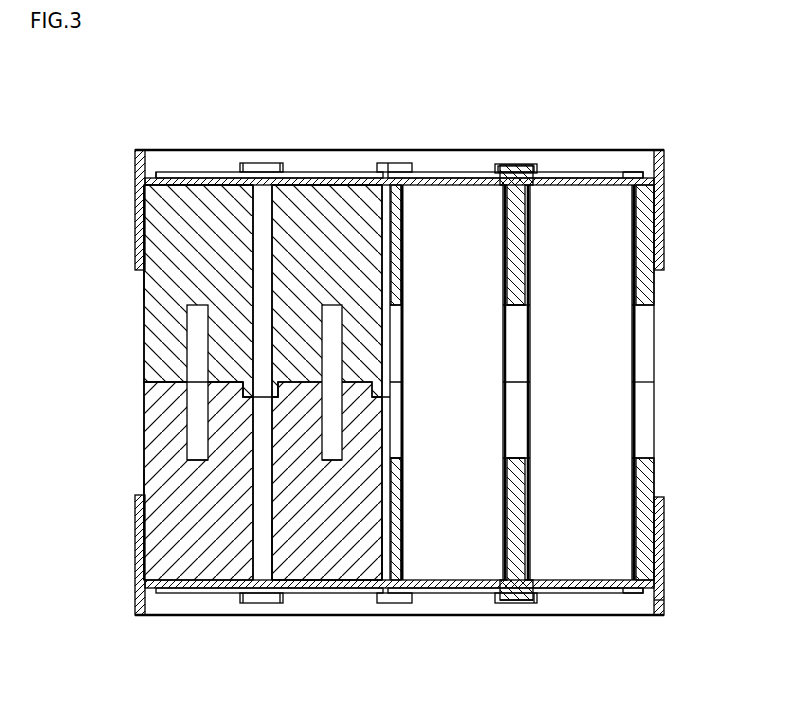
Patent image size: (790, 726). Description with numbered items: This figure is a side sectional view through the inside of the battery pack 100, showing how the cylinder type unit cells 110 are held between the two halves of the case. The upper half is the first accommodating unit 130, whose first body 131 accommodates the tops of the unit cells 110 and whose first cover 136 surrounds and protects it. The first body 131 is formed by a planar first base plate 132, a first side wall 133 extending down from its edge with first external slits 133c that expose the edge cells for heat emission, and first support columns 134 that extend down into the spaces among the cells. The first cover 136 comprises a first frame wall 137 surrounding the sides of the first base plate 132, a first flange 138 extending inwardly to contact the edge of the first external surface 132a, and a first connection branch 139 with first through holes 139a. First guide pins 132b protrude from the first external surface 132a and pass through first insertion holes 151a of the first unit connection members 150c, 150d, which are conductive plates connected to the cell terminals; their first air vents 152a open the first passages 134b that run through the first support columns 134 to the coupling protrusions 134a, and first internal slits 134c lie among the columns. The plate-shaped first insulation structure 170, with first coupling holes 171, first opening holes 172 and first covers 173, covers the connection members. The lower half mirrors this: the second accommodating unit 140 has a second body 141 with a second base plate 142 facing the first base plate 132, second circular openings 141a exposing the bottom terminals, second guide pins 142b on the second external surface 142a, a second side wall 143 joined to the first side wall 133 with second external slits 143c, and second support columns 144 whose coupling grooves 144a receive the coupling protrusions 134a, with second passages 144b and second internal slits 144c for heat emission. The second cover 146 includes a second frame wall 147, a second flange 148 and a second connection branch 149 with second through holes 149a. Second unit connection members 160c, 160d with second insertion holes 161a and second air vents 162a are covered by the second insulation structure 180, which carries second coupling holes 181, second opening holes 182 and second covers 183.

The battery pack 100 is at (135, 131).
The unit cells 110 is at (198, 440).
The first accommodating unit 130 is at (130, 240).
The first body 131 is at (140, 285).
The first base plate 132 is at (145, 192).
The first external surface 132a is at (333, 290).
The first guide pins 132b is at (524, 166).
The first side wall 133 is at (188, 328).
The first external slits 133c is at (398, 300).
The first support columns 134 is at (300, 330).
The coupling protrusions 134a is at (192, 383).
The first passages 134b is at (148, 222).
The first internal slits 134c is at (518, 345).
The first cover 136 is at (670, 146).
The first frame wall 137 is at (663, 181).
The first flange 138 is at (633, 174).
The first connection branch 139 is at (400, 163).
The first through holes 139a is at (382, 162).
The second accommodating unit 140 is at (130, 587).
The second body 141 is at (142, 478).
The second circular openings 141a is at (590, 600).
The second base plate 142 is at (333, 565).
The second external surface 142a is at (363, 570).
The second guide pins 142b is at (518, 605).
The second side wall 143 is at (160, 430).
The second external slits 143c is at (647, 432).
The second support columns 144 is at (235, 458).
The coupling grooves 144a is at (247, 392).
The second passages 144b is at (278, 548).
The second internal slits 144c is at (518, 412).
The second cover 146 is at (674, 612).
The second frame wall 147 is at (655, 583).
The second flange 148 is at (652, 613).
The second connection branch 149 is at (400, 467).
The second through holes 149a is at (395, 603).
The first unit connection member 150c is at (186, 175).
The first unit connection member 150d is at (468, 174).
The first insertion hole 151a is at (510, 164).
The first air vent 152a is at (262, 164).
The second unit connection member 160c is at (186, 593).
The second unit connection member 160d is at (603, 593).
The second insertion hole 161a is at (508, 603).
The second air vent 162a is at (260, 603).
The first insulation structure 170 is at (172, 172).
The first coupling holes 171 is at (534, 165).
The first opening holes 172 is at (253, 166).
The first covers 173 is at (270, 164).
The second insulation structure 180 is at (630, 593).
The second coupling holes 181 is at (532, 605).
The second opening holes 182 is at (248, 610).
The second covers 183 is at (270, 610).